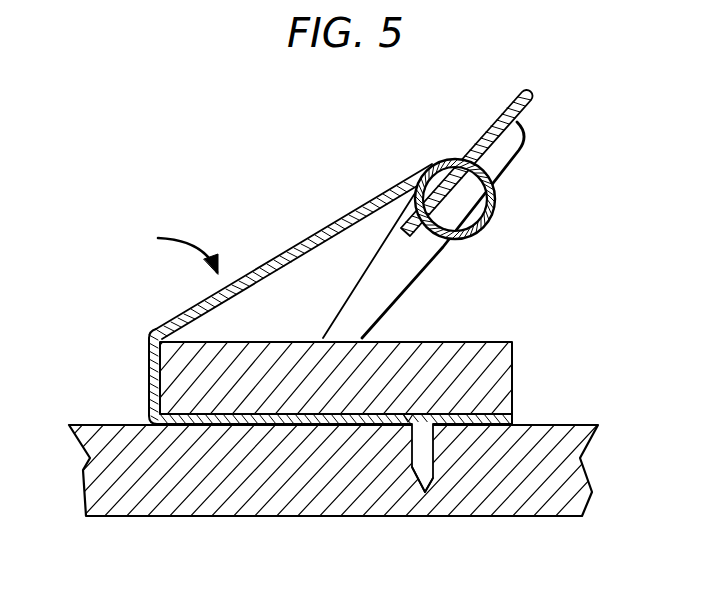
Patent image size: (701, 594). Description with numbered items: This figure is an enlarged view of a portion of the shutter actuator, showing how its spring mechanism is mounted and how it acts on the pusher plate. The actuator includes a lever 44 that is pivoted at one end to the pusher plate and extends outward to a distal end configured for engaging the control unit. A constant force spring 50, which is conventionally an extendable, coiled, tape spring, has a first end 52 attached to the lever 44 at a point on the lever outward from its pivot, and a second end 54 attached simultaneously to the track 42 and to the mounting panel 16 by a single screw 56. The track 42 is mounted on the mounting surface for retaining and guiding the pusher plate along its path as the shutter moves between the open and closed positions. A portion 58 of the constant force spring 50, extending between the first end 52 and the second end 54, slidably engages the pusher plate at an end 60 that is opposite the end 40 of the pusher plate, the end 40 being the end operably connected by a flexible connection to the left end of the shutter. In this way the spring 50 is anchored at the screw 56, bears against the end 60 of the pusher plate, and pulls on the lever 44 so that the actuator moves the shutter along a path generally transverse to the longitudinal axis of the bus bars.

The mounting panel 16 is at (528, 507).
The end of the pusher plate 40 is at (513, 360).
The track 42 is at (513, 421).
The lever 44 is at (520, 148).
The constant force spring 50 is at (353, 208).
The first end of the spring 52 is at (461, 193).
The second end of the spring 54 is at (407, 423).
The screw 56 is at (427, 493).
The portion of the constant force spring 58 is at (174, 248).
The end of the pusher plate 60 is at (162, 377).